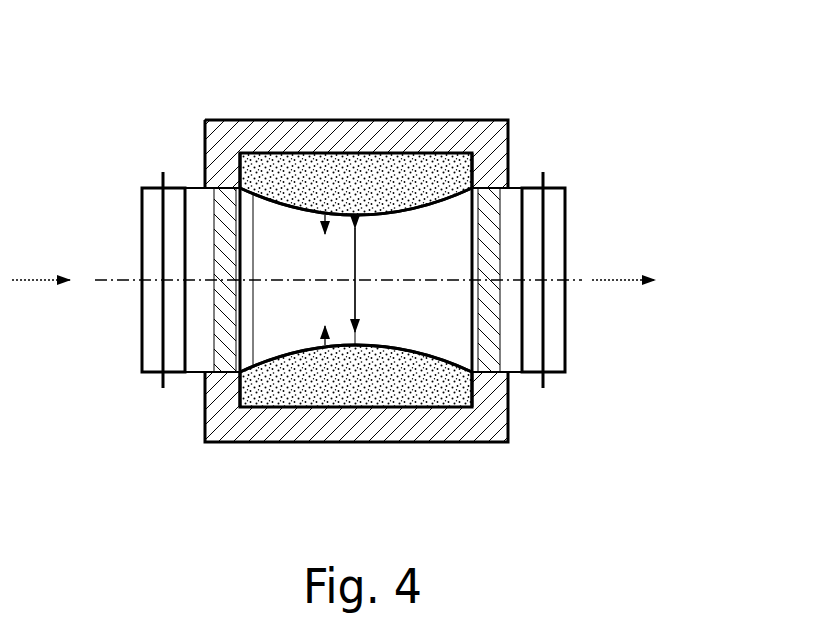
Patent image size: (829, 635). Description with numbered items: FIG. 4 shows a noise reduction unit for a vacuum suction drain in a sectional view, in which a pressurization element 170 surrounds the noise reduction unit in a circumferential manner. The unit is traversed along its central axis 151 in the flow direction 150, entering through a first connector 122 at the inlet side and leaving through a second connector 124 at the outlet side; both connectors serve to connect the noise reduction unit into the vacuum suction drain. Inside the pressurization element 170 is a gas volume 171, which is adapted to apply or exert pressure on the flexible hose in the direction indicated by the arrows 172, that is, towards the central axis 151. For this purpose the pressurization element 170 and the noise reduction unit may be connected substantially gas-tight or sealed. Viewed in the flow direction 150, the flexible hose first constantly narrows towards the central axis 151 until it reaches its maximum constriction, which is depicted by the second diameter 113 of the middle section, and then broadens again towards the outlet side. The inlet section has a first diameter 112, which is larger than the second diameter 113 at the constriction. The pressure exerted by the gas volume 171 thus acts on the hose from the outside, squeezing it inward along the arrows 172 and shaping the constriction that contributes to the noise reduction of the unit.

The pressurization element 170 is at (398, 116).
The gas volume 171 is at (365, 170).
The arrows 172 is at (327, 213).
The first connector 122 is at (163, 170).
The second connector 124 is at (543, 168).
The flow direction 150 is at (55, 276).
The central axis 151 is at (110, 281).
The first diameter 112 is at (253, 318).
The second diameter 113 is at (353, 300).